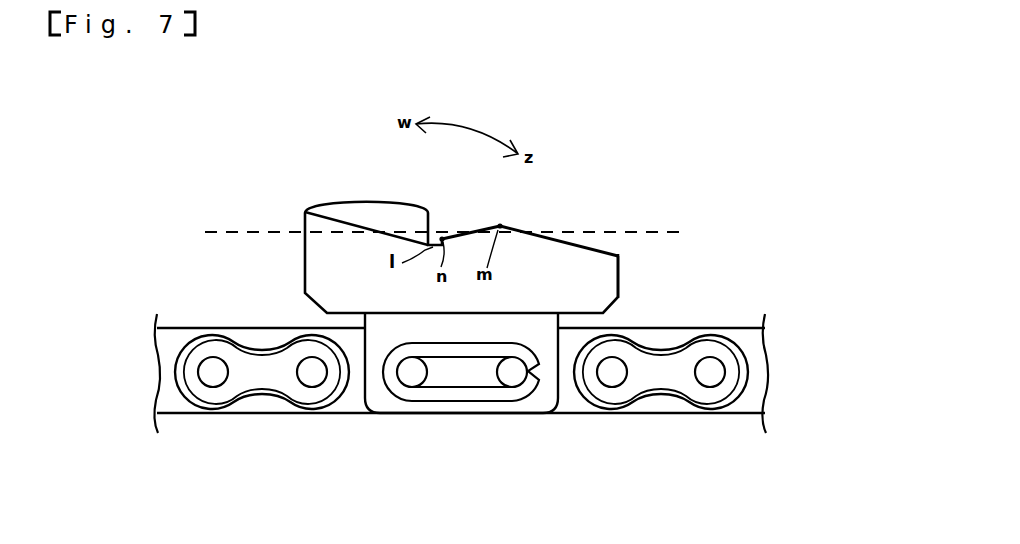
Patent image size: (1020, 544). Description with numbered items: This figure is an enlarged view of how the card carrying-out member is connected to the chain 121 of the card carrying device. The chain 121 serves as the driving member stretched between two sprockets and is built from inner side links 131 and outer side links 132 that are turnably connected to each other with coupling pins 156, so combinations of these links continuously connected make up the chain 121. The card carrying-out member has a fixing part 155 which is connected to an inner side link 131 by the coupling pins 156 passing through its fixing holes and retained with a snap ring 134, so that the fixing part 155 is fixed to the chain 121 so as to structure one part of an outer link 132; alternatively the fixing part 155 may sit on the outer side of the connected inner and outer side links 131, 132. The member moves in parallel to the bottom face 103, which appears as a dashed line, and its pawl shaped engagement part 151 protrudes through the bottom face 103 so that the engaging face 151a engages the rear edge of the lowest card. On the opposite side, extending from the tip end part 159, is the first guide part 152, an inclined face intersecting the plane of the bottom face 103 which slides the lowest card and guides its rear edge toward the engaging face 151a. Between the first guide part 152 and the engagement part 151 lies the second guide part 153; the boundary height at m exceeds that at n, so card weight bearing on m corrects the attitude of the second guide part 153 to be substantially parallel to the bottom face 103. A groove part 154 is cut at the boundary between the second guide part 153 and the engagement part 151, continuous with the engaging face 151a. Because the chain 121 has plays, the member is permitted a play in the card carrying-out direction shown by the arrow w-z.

The bottom face 103 is at (230, 232).
The chain 121 is at (777, 288).
The inner side link 131 is at (173, 407).
The outer side link 132 is at (263, 383).
The snap ring 134 is at (510, 395).
The engagement part 151 is at (370, 198).
The engaging face 151a is at (430, 230).
The first guide part 152 is at (603, 250).
The second guide part 153 is at (478, 230).
The groove part 154 is at (305, 212).
The fixing part 155 is at (390, 334).
The coupling pins 156 is at (513, 388).
The tip end part 159 is at (623, 255).